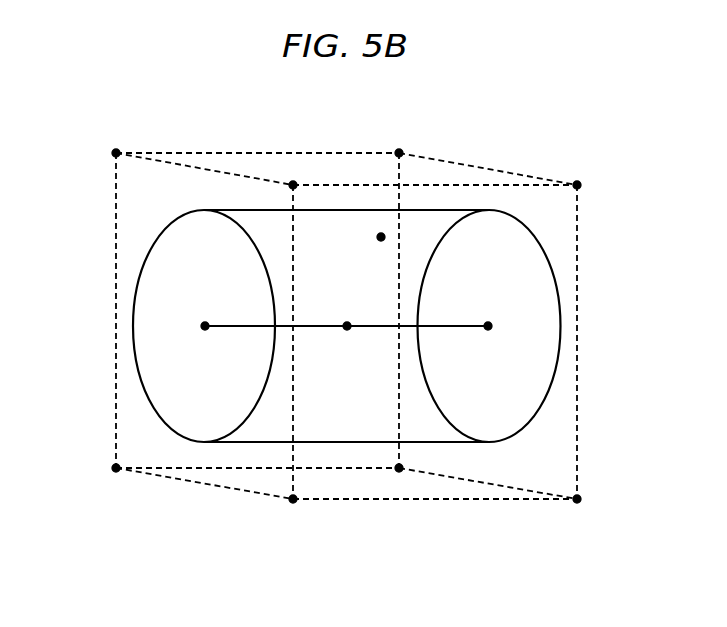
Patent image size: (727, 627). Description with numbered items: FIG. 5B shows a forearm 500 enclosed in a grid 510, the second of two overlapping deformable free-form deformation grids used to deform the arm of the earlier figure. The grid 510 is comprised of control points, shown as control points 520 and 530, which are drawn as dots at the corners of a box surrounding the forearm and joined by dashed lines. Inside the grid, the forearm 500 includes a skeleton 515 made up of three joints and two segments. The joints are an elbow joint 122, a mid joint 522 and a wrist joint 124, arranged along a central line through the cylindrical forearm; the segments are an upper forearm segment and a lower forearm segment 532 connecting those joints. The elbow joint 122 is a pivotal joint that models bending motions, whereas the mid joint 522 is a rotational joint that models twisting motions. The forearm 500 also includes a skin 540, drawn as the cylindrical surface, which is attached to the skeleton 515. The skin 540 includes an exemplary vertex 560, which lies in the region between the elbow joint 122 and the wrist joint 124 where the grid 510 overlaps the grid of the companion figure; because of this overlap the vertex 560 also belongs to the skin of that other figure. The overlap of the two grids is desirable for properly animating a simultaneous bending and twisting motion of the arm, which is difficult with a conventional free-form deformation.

The forearm 500 is at (134, 344).
The grid 510 is at (114, 270).
The skeleton 515 is at (312, 318).
The control points 520 is at (116, 150).
The control points 530 is at (399, 150).
The lower forearm segment 532 is at (459, 325).
The skin 540 is at (345, 442).
The vertex 560 is at (382, 240).
The elbow joint 122 is at (205, 329).
The wrist joint 124 is at (488, 329).
The mid joint 522 is at (347, 329).